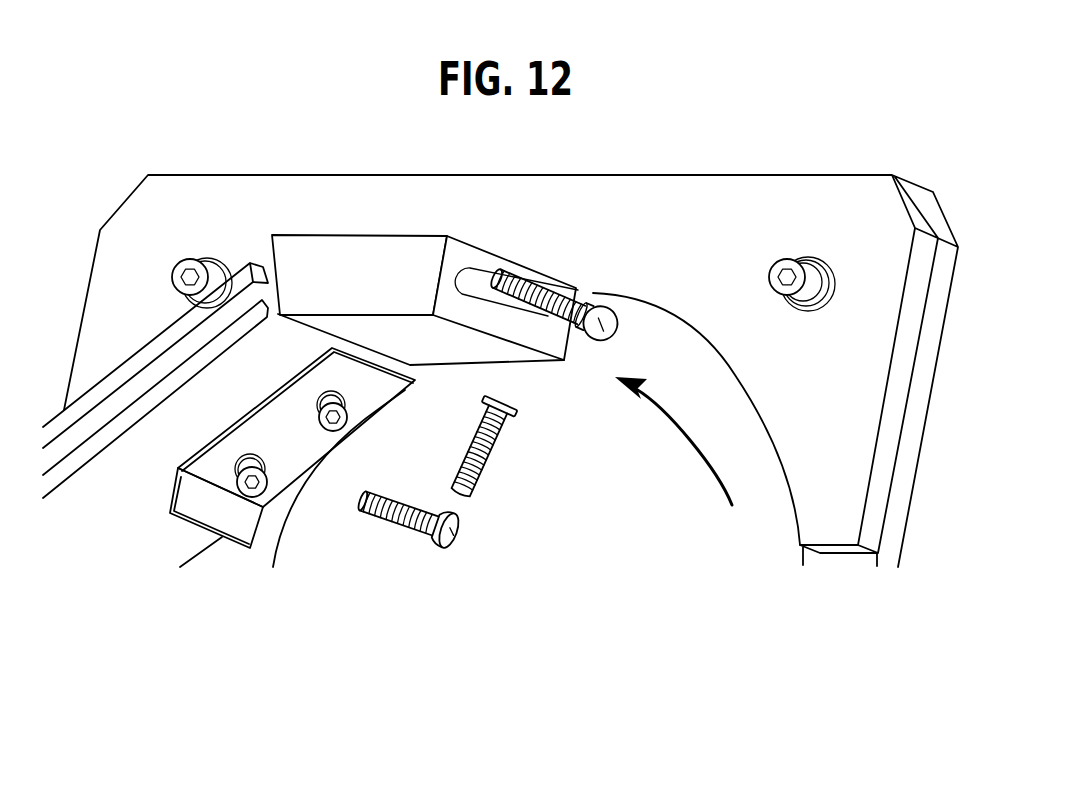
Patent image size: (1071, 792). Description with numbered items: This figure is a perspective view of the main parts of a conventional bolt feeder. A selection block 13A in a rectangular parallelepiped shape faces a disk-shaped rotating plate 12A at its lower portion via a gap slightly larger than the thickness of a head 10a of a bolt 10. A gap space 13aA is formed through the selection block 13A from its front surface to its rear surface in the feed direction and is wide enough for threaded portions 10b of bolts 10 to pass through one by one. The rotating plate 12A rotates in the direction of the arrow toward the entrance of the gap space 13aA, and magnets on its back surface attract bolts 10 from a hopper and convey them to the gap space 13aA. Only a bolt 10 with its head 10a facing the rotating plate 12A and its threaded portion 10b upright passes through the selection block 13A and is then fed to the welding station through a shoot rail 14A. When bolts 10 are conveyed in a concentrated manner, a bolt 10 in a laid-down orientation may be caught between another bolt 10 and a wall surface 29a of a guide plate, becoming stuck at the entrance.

The bolt 10 is at (474, 403).
The head 10a is at (477, 575).
The threaded portion 10b is at (402, 527).
The rotating plate 12A is at (742, 525).
The selection block 13A is at (425, 243).
The gap space 13aA is at (459, 262).
The shoot rail 14A is at (128, 373).
The wall surface 29a is at (763, 417).